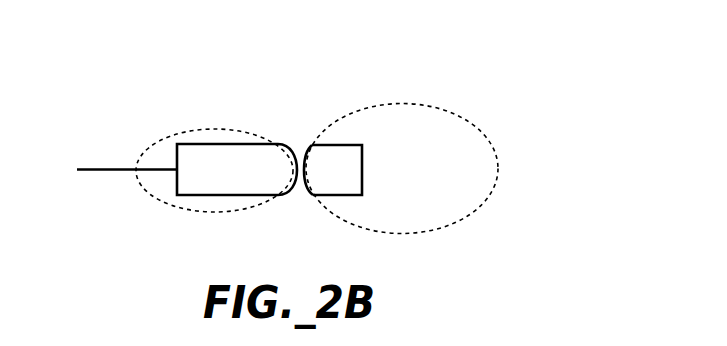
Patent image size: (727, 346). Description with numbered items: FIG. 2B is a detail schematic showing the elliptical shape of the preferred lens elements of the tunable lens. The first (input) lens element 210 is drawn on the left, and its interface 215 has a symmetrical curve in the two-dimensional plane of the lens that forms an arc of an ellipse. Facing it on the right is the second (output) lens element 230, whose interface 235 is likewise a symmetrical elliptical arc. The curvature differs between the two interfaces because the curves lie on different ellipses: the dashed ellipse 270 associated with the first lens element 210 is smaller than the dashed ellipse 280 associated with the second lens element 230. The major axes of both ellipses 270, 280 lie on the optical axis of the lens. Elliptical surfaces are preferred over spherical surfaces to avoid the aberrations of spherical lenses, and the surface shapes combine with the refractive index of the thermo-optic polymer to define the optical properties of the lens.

The first (input) lens element 210 is at (212, 156).
The interface 215 is at (287, 143).
The second (output) lens element 230 is at (333, 157).
The interface 235 is at (308, 185).
The ellipse 270 is at (163, 203).
The ellipse 280 is at (472, 214).